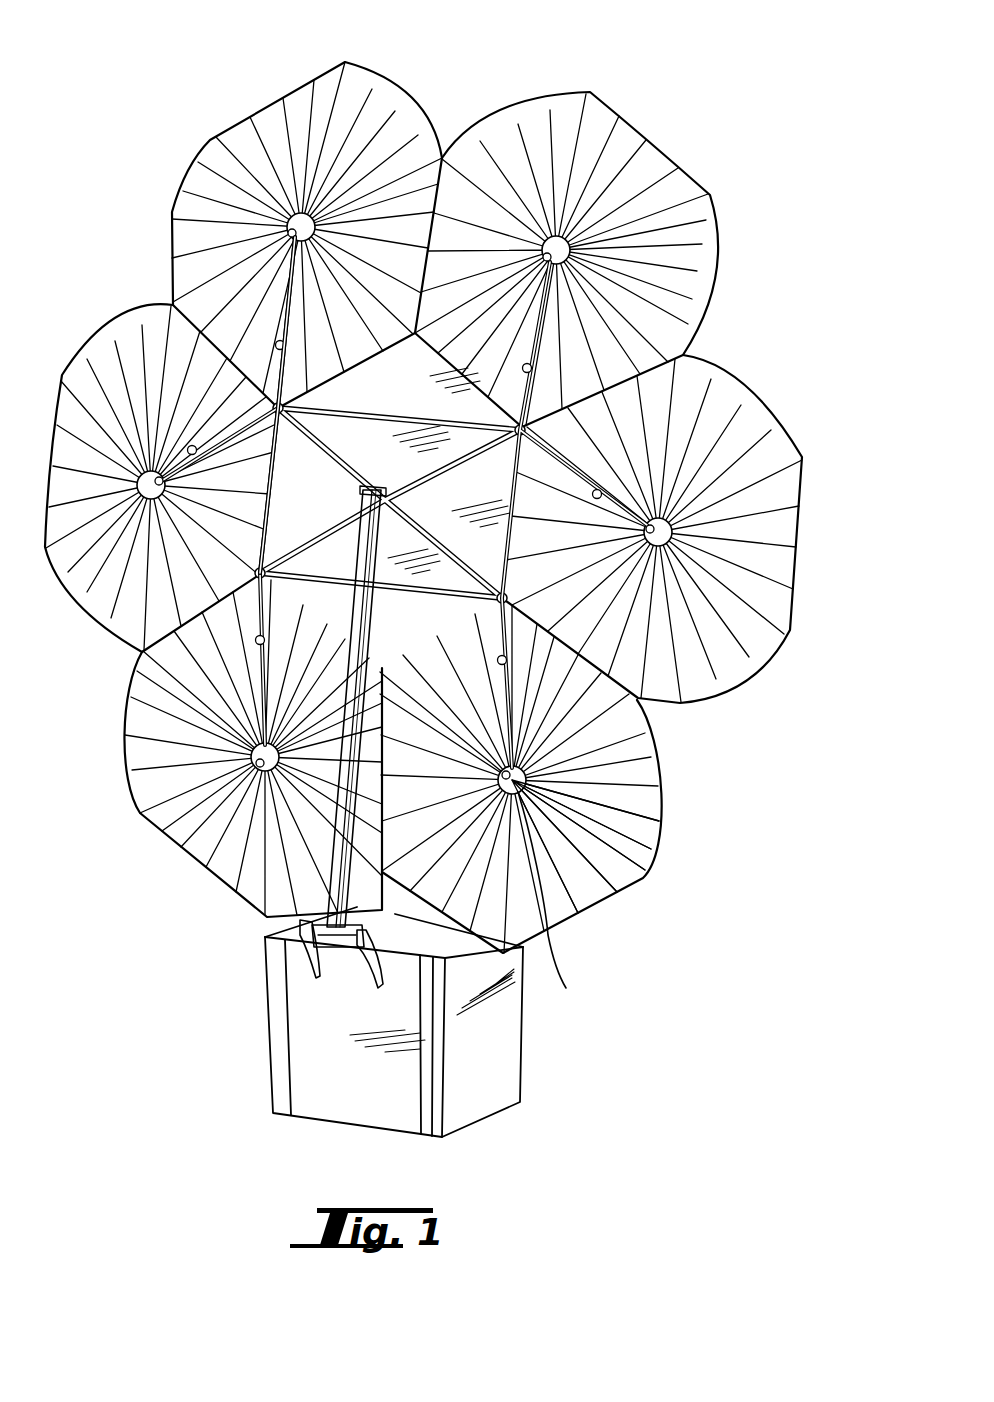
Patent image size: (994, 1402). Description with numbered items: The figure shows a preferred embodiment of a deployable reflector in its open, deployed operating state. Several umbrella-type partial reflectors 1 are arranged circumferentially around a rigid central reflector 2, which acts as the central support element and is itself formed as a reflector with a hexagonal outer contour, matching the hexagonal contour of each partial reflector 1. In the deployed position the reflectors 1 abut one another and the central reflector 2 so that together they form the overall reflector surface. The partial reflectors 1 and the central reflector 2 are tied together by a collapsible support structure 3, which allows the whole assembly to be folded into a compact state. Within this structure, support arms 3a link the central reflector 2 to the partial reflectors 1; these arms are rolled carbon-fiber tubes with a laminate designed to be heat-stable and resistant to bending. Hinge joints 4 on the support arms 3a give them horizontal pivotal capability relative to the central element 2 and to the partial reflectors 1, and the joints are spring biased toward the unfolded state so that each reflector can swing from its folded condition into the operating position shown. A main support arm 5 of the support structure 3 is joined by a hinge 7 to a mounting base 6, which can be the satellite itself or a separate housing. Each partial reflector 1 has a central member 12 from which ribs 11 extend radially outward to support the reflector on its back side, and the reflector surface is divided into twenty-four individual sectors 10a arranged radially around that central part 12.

The partial reflector 1 is at (388, 100).
The central reflector 2 is at (402, 398).
The support structure 3 is at (323, 543).
The support arm 3a is at (283, 290).
The hinge joint 4 is at (276, 300).
The main support arm 5 is at (340, 853).
The mounting base 6 is at (497, 1053).
The hinge 7 is at (300, 962).
The sector 10a is at (580, 893).
The rib 11 is at (630, 820).
The central member 12 is at (562, 901).